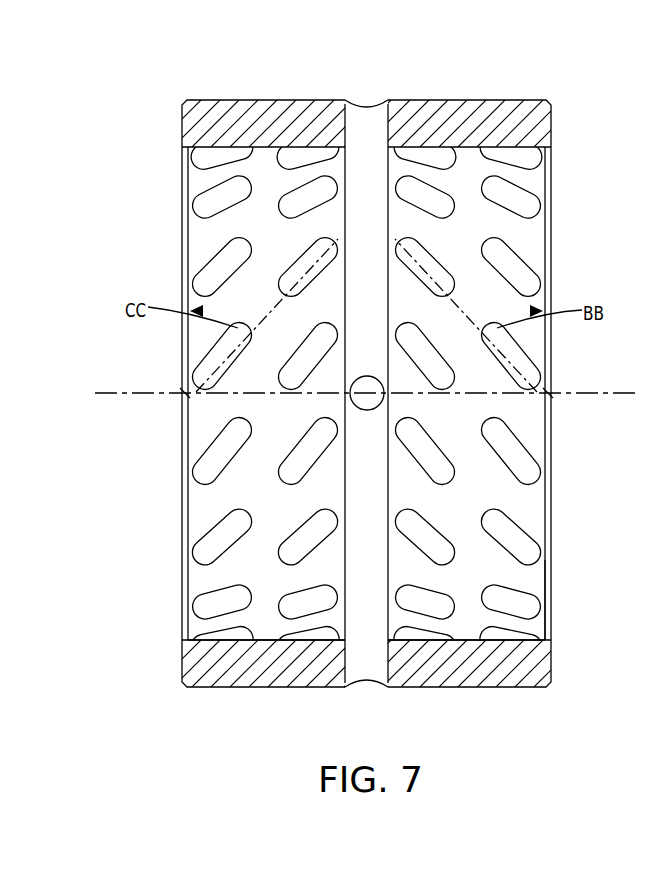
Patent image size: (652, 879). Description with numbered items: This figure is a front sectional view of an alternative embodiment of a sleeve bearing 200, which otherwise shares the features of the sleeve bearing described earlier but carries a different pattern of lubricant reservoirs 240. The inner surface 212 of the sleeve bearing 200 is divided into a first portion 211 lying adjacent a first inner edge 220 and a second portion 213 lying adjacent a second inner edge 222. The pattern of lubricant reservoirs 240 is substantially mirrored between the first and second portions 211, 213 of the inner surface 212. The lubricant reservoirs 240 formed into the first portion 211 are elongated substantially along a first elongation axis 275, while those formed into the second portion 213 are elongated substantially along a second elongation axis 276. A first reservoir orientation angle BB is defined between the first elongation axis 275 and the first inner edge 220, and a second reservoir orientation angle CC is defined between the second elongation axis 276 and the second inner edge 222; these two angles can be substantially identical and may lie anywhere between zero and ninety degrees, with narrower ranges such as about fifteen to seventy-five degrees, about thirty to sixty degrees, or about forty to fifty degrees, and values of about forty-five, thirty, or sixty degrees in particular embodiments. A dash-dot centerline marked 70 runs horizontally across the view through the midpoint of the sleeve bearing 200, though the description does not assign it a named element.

The sleeve bearing 200 is at (503, 78).
The first inner edge 220 is at (552, 215).
The second inner edge 222 is at (182, 593).
The lubricant reservoirs 240 is at (215, 192).
The central axis 70 is at (594, 393).
The first elongation axis 275 is at (552, 399).
The second elongation axis 276 is at (181, 399).
The first portion 211 is at (463, 623).
The inner surface 212 is at (532, 583).
The second portion 213 is at (263, 623).